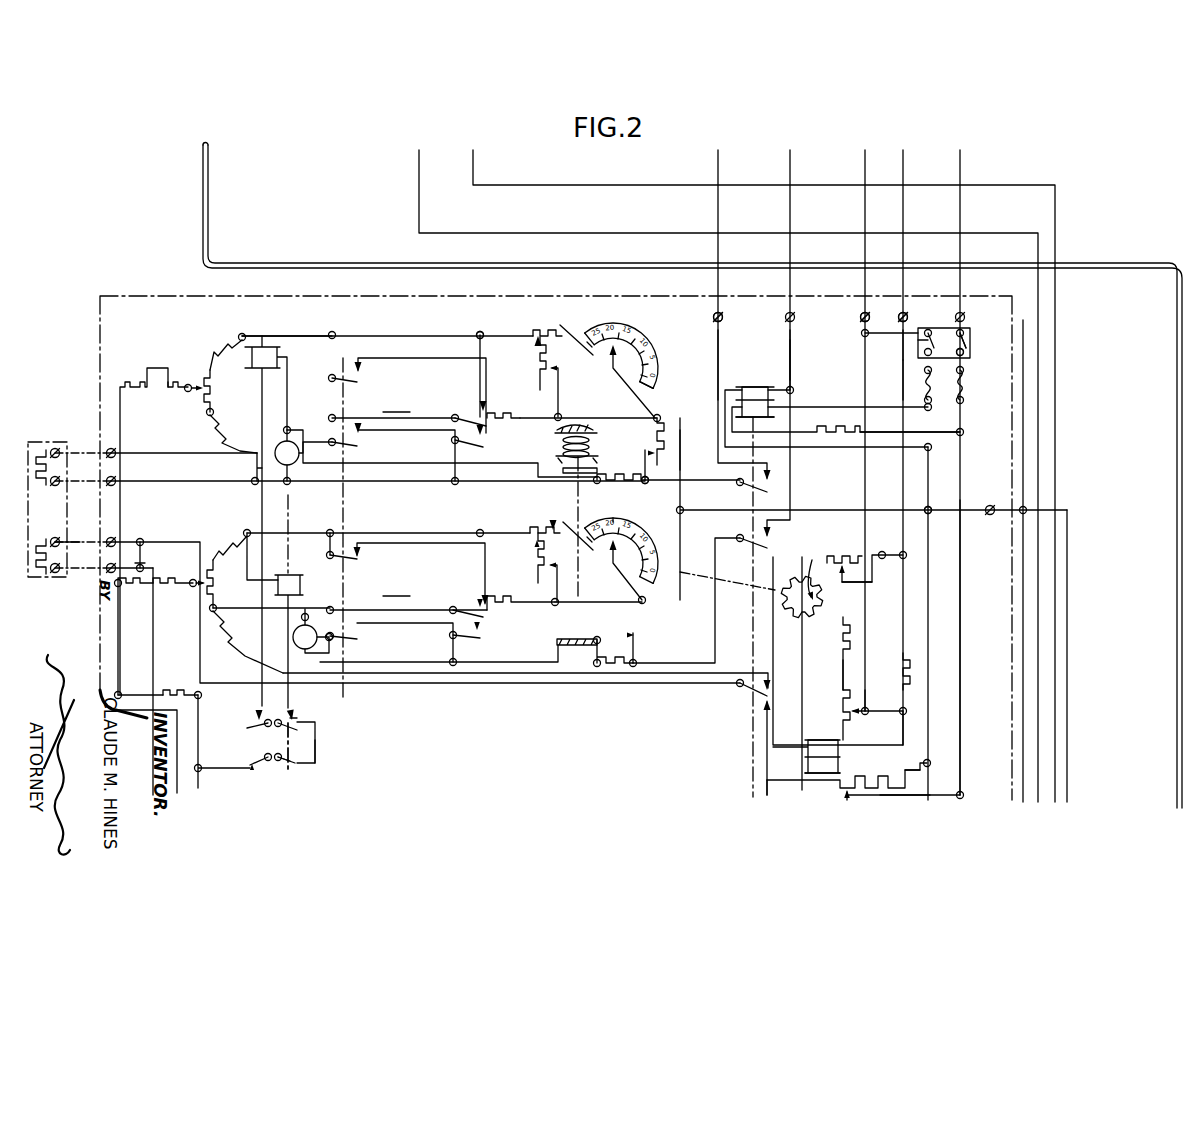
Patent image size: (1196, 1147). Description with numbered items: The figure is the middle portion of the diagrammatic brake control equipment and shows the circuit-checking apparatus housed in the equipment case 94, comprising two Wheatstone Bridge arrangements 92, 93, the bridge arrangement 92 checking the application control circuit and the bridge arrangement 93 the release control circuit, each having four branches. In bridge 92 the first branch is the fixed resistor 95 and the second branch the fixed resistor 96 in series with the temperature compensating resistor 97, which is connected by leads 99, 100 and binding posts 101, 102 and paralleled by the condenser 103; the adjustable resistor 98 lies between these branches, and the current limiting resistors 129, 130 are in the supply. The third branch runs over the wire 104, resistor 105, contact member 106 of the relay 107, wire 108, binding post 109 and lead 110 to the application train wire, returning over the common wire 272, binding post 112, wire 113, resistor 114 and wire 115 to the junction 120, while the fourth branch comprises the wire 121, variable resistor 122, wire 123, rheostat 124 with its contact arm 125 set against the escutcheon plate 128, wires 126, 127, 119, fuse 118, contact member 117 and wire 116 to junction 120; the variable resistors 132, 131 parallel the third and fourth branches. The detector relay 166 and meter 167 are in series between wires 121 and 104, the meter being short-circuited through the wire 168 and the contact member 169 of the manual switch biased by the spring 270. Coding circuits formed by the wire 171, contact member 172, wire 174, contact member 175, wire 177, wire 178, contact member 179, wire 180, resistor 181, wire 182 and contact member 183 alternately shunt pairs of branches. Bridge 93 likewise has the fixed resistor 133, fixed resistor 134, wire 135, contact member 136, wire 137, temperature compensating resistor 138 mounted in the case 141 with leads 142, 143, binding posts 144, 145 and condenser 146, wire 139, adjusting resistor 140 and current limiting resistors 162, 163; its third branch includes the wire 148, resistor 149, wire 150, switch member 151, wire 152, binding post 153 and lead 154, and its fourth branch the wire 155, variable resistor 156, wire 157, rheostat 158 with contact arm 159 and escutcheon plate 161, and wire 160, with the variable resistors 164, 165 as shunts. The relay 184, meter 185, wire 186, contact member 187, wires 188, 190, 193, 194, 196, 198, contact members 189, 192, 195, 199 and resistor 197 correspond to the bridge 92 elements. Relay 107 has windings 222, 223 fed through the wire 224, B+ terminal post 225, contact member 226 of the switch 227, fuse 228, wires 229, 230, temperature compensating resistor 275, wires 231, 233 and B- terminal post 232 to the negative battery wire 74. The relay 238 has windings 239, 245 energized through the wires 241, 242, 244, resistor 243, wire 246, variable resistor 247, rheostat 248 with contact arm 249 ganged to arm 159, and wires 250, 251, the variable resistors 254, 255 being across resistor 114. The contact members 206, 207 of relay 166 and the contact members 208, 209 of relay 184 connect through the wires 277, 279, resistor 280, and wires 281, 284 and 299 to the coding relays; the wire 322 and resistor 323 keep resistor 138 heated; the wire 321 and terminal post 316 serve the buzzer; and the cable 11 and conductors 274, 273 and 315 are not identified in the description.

The cable 11 is at (210, 165).
The conductor 274 is at (418, 165).
The conductor 273 is at (472, 165).
The wire 321 is at (1068, 597).
The conductor 315 is at (1022, 562).
The terminal post 316 is at (981, 522).
The lead 110 is at (717, 165).
The wire 108 is at (717, 342).
The binding post 109 is at (722, 321).
The lead 154 is at (789, 165).
The binding post 153 is at (794, 321).
The wire 152 is at (791, 352).
The negative battery wire 74 is at (864, 165).
The binding post 112 is at (900, 320).
The B- terminal post 232 is at (860, 318).
The common wire 272 is at (902, 165).
The wire 224 is at (959, 165).
The wire 229 is at (964, 608).
The wire 119 is at (929, 480).
The B+ terminal post 225 is at (963, 330).
The contact member 226 is at (968, 350).
The double-pole-single-throw switch 227 is at (966, 356).
The fuse 228 is at (965, 390).
The fuse 118 is at (926, 382).
The wire 113 is at (902, 382).
The wire 116 is at (894, 336).
The contact member 117 is at (915, 340).
The junction 120 is at (862, 338).
The relay 107 is at (746, 382).
The winding 223 is at (760, 378).
The winding 222 is at (765, 418).
The wire 231 is at (837, 406).
The temperature compensating resistor 275 is at (846, 419).
The wire 230 is at (898, 428).
The wire 233 is at (840, 449).
The switch contact member 106 is at (740, 488).
The wire 127 is at (682, 509).
The wire 126 is at (681, 448).
The variable resistor 132 is at (662, 422).
The wire 182 is at (612, 420).
The resistor 181 is at (516, 413).
The wire 171 is at (379, 416).
The contact member 175 is at (482, 419).
The contact member 183 is at (485, 445).
The wire 177 is at (479, 383).
The wire 180 is at (408, 358).
The contact member 179 is at (361, 381).
The wire 121 is at (394, 335).
The variable resistor 122 is at (540, 333).
The wire 123 is at (564, 343).
The variable resistor 131 is at (538, 362).
The contact arm 125 is at (608, 366).
The escutcheon plate 128 is at (633, 332).
The rheostat 124 is at (652, 382).
The spring 270 is at (550, 452).
The switch contact member 169 is at (580, 463).
The resistor 105 is at (621, 468).
The wire 168 is at (385, 464).
The wire 104 is at (418, 482).
The wire 174 is at (437, 430).
The contact member 172 is at (362, 438).
The condenser 103 is at (255, 472).
The electric meter 167 is at (291, 464).
The fixed resistor 96 is at (225, 447).
The adjustable resistor 98 is at (214, 386).
The current limiting resistor 130 is at (178, 385).
The current limiting resistor 129 is at (145, 383).
The fixed resistor 95 is at (228, 352).
The detector relay 166 is at (277, 353).
The wire 178 is at (328, 355).
The equipment case 94 is at (96, 328).
The lead 99 is at (100, 451).
The binding post 101 is at (113, 450).
The temperature compensating resistor 97 is at (47, 476).
The lead 100 is at (96, 485).
The binding post 102 is at (114, 485).
The temperature compensating resistor 138 is at (44, 525).
The case 141 is at (32, 523).
The lead 142 is at (90, 540).
The binding post 144 is at (113, 540).
The lead 143 is at (96, 567).
The binding post 145 is at (108, 571).
The condenser 146 is at (146, 551).
The wire 139 is at (152, 635).
The wire 277 is at (192, 804).
The wire 279 is at (150, 694).
The resistor 280 is at (174, 689).
The current limiting resistor 162 is at (134, 636).
The current limiting resistor 163 is at (167, 590).
The fixed resistor 133 is at (230, 541).
The adjusting resistor 140 is at (216, 590).
The fixed resistor 134 is at (231, 630).
The wire 135 is at (275, 672).
The wire 137 is at (403, 684).
The switch contact member 136 is at (740, 690).
The wire 188 is at (274, 601).
The electric meter 185 is at (299, 632).
The relay 184 is at (290, 573).
The wire 194 is at (326, 550).
The wire 155 is at (400, 533).
The variable resistor 156 is at (540, 530).
The wire 157 is at (578, 537).
The variable resistor 164 is at (537, 562).
The wire 196 is at (452, 545).
The contact member 195 is at (360, 558).
The wire 193 is at (479, 582).
The resistor 197 is at (518, 598).
The wire 198 is at (618, 600).
The contact member 192 is at (485, 612).
The contact member 199 is at (484, 636).
The wire 190 is at (435, 624).
The contact member 189 is at (360, 638).
The wire 186 is at (557, 645).
The contact member 187 is at (581, 638).
The variable resistor 165 is at (633, 648).
The resistor 149 is at (616, 646).
The wire 150 is at (714, 622).
The switch member 151 is at (749, 545).
The wire 160 is at (681, 572).
The contact arm 159 is at (610, 562).
The rheostat 158 is at (644, 538).
The escutcheon plate 161 is at (614, 518).
The Wheatstone Bridge arrangement 93 is at (396, 585).
The Wheatstone Bridge arrangement 92 is at (396, 401).
The variable resistor 247 is at (845, 552).
The contact arm 249 is at (807, 568).
The rheostat 248 is at (805, 604).
The variable resistor 255 is at (842, 635).
The wire 250 is at (773, 642).
The wire 148 is at (803, 682).
The variable resistor 254 is at (856, 712).
The wire 251 is at (902, 730).
The relay 238 is at (838, 738).
The winding 245 is at (838, 753).
The winding 239 is at (838, 770).
The wire 242 is at (847, 777).
The resistor 243 is at (908, 763).
The wire 244 is at (932, 763).
The wire 241 is at (770, 794).
The resistor 323 is at (846, 798).
The wire 322 is at (918, 797).
The resistor 114 is at (900, 678).
The wire 115 is at (866, 690).
The wire 246 is at (853, 585).
The front contact member 206 is at (247, 728).
The front contact member 208 is at (295, 720).
The back contact member 207 is at (250, 763).
The back contact member 209 is at (283, 768).
The wire 281 is at (199, 795).
The wire 284 is at (293, 776).
The wire 299 is at (318, 760).